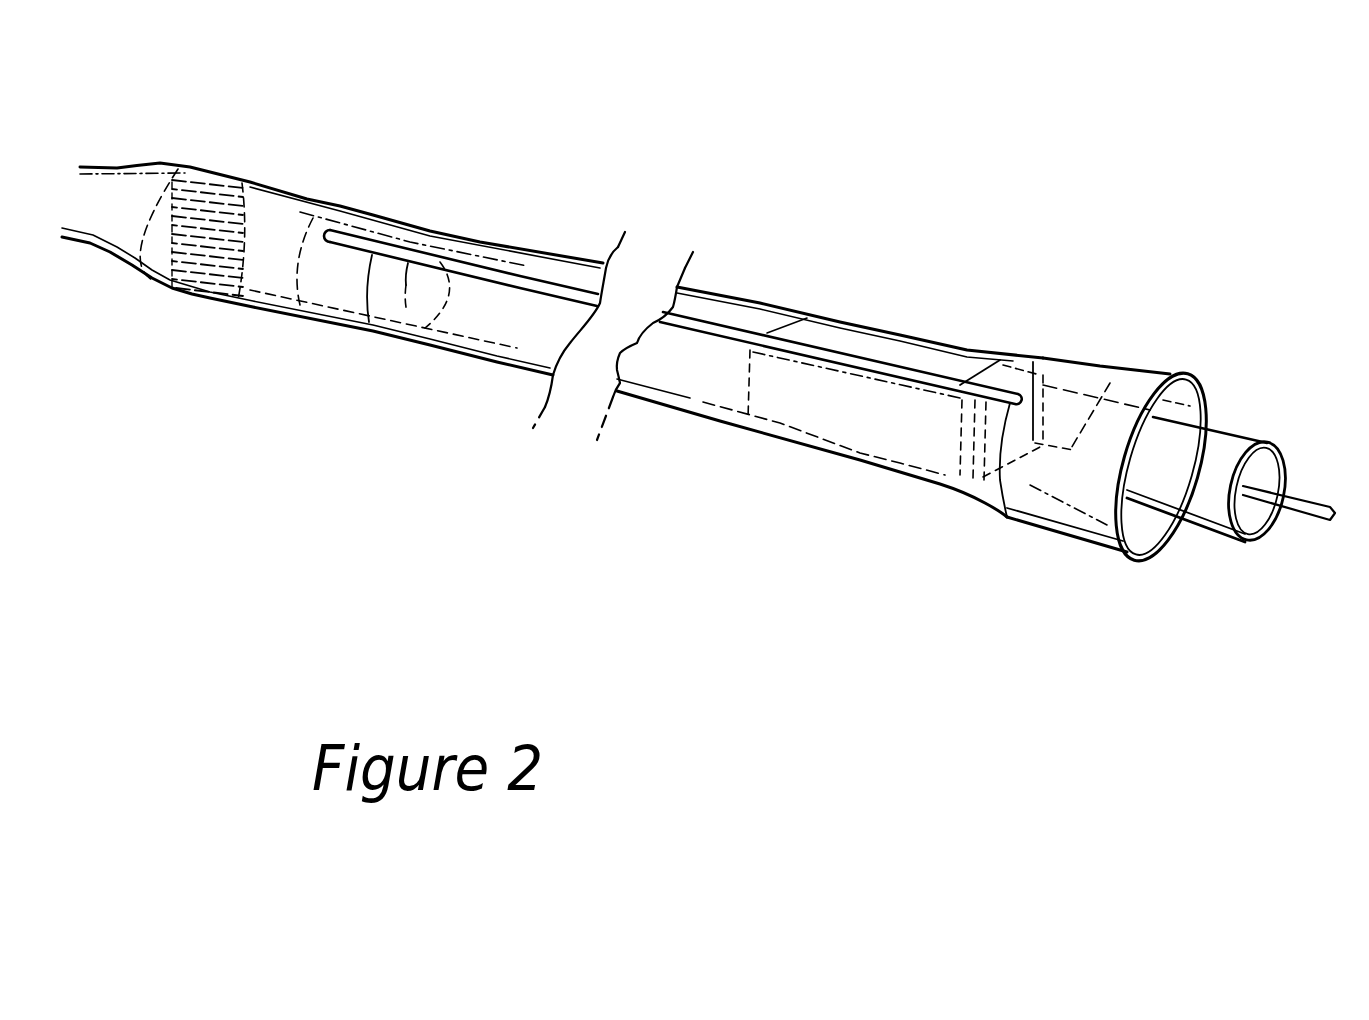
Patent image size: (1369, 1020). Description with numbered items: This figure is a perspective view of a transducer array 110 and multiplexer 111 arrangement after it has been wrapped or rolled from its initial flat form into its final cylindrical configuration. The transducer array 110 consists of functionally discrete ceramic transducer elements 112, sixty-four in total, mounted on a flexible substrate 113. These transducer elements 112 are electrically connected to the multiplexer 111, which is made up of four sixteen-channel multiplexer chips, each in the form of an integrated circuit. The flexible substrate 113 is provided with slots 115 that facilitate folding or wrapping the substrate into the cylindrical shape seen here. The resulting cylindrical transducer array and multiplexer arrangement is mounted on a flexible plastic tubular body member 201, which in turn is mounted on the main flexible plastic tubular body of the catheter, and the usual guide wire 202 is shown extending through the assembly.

The transducer array 110 is at (186, 302).
The multiplexer 111 is at (890, 343).
The transducer elements 112 is at (243, 192).
The flexible substrate 113 is at (508, 313).
The slots 115 is at (713, 328).
The flexible plastic tubular body member 201 is at (1197, 513).
The guide wire 202 is at (1290, 515).